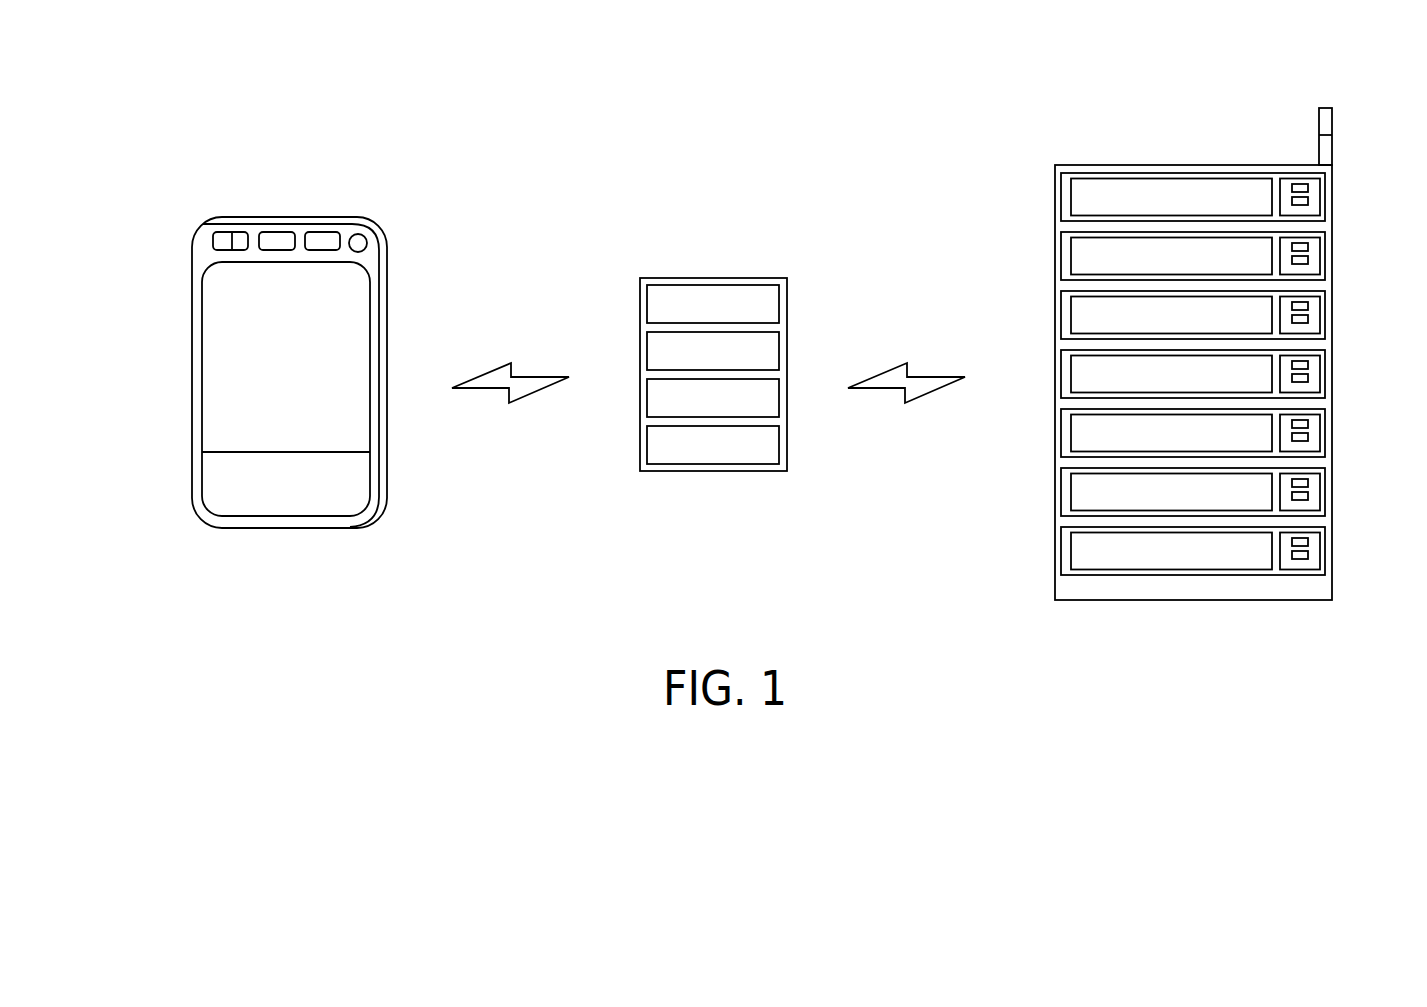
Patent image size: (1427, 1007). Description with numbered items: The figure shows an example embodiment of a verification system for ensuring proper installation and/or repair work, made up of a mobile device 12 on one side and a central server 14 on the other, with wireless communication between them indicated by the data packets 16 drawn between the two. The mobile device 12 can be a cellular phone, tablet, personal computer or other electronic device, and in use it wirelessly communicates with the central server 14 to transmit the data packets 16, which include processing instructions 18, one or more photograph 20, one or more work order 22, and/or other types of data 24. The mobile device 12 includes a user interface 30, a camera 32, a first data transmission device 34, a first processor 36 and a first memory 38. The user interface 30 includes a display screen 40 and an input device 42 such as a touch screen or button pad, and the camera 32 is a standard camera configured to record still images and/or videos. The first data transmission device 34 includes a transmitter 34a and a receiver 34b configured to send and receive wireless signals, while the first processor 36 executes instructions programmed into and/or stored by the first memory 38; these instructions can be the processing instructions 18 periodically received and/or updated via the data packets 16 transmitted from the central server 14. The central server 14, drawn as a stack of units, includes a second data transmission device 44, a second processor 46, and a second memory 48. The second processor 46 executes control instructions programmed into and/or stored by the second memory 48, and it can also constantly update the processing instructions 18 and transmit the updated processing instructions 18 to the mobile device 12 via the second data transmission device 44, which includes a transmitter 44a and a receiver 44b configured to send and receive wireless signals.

The mobile device 12 is at (444, 205).
The central server 14 is at (1012, 146).
The data packets 16 is at (787, 373).
The processing instructions 18 is at (646, 303).
The photograph 20 is at (646, 350).
The work order 22 is at (646, 397).
The other types of data 24 is at (646, 443).
The user interface 30 is at (201, 390).
The camera 32 is at (367, 243).
The first data transmission device 34 is at (213, 243).
The transmitter 34a is at (223, 232).
The receiver 34b is at (237, 232).
The first processor 36 is at (280, 232).
The first memory 38 is at (327, 232).
The display screen 40 is at (335, 363).
The input device 42 is at (342, 476).
The second data transmission device 44 is at (1332, 135).
The transmitter 44a is at (1323, 122).
The receiver 44b is at (1326, 150).
The second processor 46 is at (1320, 195).
The second memory 48 is at (1071, 195).